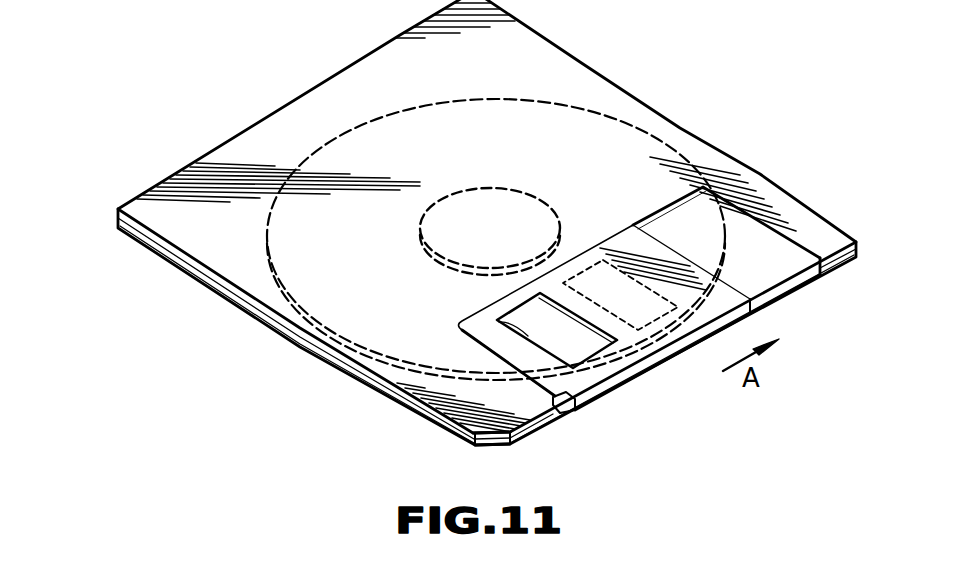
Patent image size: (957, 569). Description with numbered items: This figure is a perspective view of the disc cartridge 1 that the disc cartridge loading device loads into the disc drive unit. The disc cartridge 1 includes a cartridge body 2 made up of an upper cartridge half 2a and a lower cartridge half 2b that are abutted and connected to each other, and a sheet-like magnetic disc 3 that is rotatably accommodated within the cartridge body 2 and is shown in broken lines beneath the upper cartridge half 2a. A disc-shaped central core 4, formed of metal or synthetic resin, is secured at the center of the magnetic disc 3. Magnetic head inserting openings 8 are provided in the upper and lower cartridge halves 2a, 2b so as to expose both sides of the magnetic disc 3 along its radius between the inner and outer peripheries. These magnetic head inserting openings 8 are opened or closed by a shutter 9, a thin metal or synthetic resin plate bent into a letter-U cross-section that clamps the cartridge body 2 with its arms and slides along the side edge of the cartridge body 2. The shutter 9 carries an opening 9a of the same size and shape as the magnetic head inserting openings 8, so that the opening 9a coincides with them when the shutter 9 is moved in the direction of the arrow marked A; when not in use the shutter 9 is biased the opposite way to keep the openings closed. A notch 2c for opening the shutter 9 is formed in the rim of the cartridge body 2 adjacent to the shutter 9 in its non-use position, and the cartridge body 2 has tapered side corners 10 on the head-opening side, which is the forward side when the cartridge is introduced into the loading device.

The disc cartridge 1 is at (250, 152).
The cartridge body 2 is at (66, 150).
The upper cartridge half 2a is at (138, 210).
The lower cartridge half 2b is at (126, 226).
The notch 2c is at (561, 414).
The magnetic disc 3 is at (596, 126).
The central core 4 is at (545, 207).
The magnetic head inserting opening 8 is at (618, 316).
The shutter 9 is at (594, 391).
The opening 9a is at (527, 337).
The tapered side corner 10 is at (478, 443).